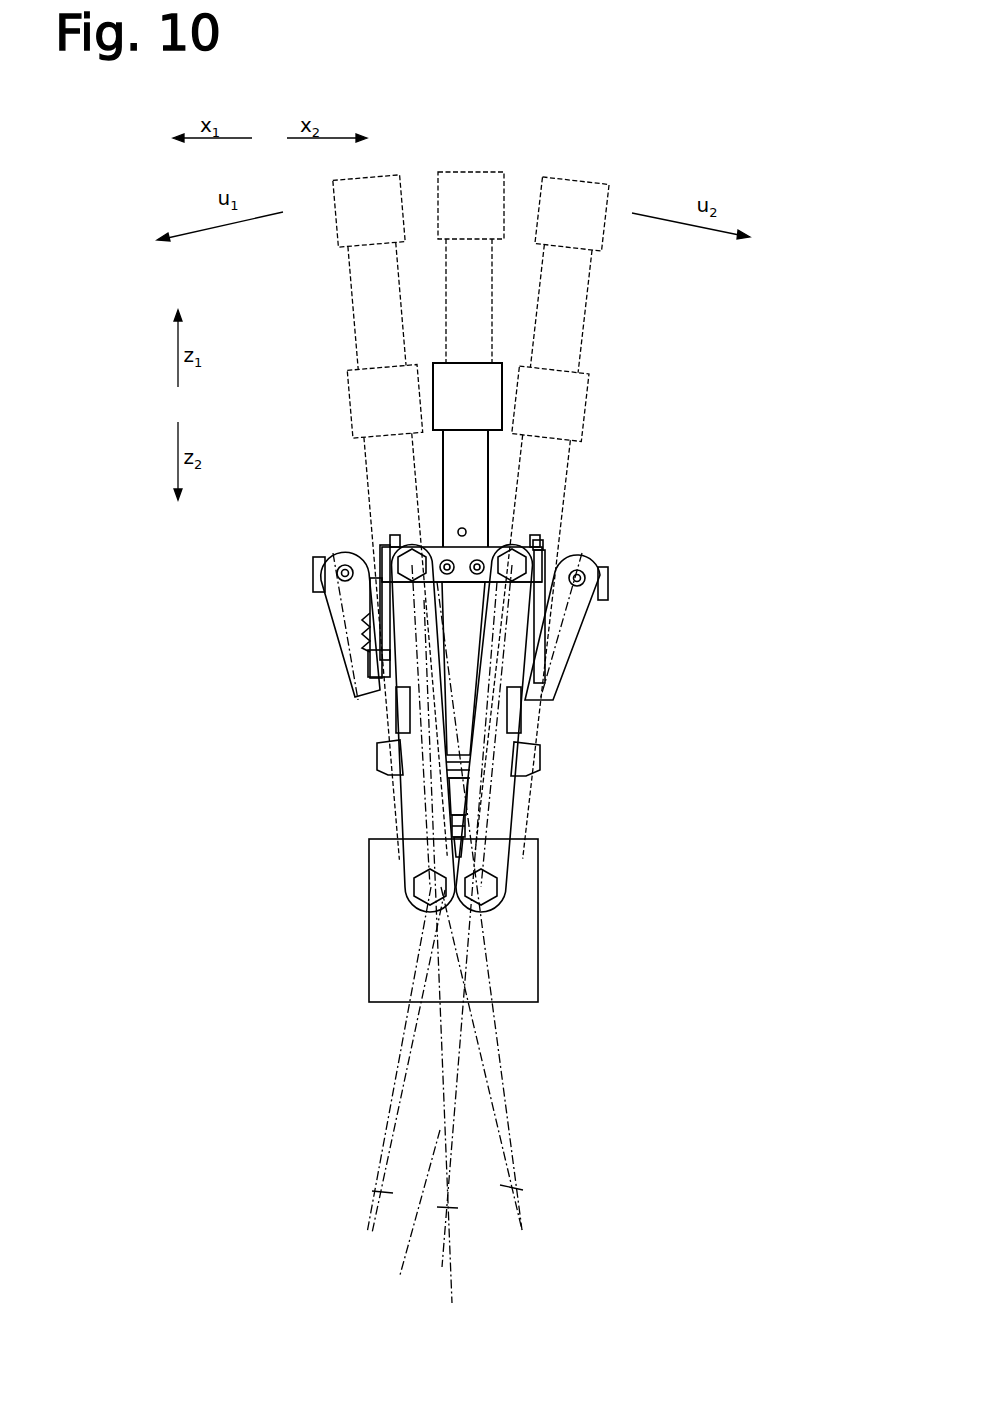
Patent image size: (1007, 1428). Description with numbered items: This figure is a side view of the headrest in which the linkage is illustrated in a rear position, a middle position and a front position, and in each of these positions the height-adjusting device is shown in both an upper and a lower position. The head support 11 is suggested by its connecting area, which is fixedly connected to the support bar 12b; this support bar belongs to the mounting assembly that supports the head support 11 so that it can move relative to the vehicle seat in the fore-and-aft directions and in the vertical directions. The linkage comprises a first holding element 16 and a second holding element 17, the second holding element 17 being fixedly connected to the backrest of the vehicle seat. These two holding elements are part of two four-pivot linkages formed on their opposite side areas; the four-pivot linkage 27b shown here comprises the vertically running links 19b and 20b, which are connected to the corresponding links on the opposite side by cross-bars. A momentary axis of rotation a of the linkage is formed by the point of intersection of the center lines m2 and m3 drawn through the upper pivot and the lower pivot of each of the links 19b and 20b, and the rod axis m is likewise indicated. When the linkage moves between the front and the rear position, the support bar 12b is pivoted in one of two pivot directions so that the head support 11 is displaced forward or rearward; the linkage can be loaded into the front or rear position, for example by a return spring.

The head support 11 is at (353, 218).
The support bar 12b is at (370, 310).
The first holding element 16 is at (333, 552).
The second holding element 17 is at (507, 942).
The link 19b is at (352, 638).
The link 20b is at (553, 660).
The four-pivot linkage 27b is at (540, 796).
The rod axis m is at (427, 808).
The center line m2 is at (398, 1058).
The center line m3 is at (413, 1095).
The momentary axis of rotation a is at (372, 1200).